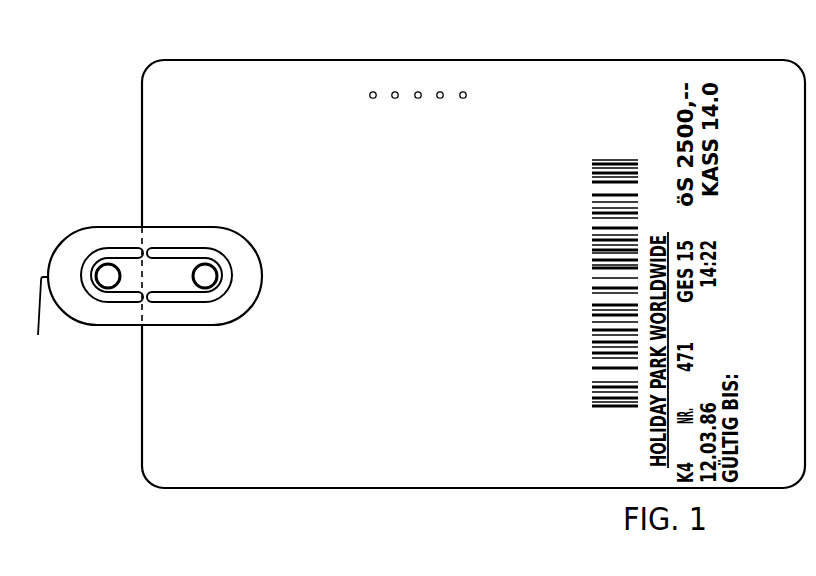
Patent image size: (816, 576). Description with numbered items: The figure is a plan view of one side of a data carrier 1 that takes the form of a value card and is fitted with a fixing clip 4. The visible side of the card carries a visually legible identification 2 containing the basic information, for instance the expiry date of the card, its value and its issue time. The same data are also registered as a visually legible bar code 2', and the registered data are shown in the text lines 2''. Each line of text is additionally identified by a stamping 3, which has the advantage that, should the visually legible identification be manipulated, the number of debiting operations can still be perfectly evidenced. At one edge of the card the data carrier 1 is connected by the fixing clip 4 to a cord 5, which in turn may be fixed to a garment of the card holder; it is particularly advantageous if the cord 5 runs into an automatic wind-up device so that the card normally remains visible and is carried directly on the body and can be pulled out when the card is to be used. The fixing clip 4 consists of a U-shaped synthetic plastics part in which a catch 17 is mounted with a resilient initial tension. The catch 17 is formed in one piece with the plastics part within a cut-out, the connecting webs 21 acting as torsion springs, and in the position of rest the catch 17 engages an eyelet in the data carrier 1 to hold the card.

The data carrier 1 is at (488, 62).
The visually legible identification 2 is at (770, 217).
The bar code 2' is at (615, 317).
The text lines 2'' is at (372, 289).
The stamping 3 is at (418, 91).
The fixing clip 4 is at (126, 227).
The cord 5 is at (39, 317).
The catch 17 is at (173, 277).
The connecting webs 21 is at (140, 298).